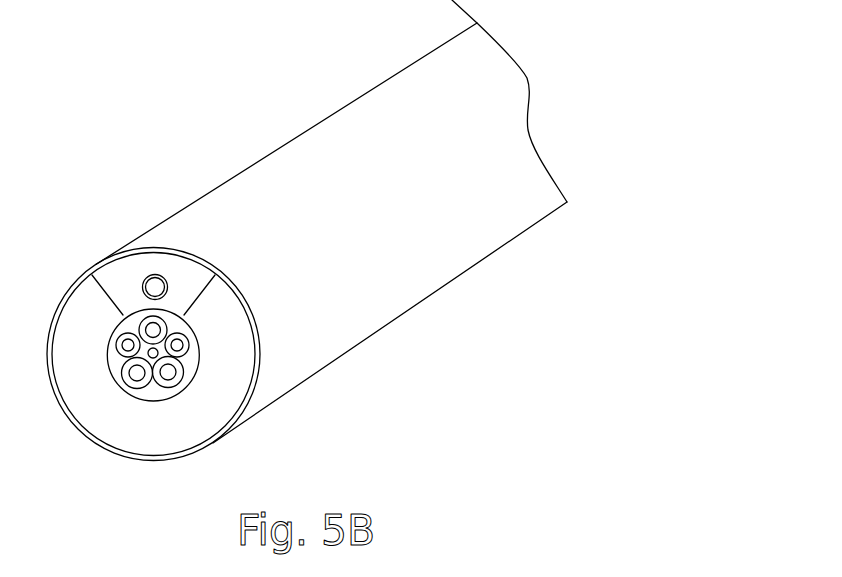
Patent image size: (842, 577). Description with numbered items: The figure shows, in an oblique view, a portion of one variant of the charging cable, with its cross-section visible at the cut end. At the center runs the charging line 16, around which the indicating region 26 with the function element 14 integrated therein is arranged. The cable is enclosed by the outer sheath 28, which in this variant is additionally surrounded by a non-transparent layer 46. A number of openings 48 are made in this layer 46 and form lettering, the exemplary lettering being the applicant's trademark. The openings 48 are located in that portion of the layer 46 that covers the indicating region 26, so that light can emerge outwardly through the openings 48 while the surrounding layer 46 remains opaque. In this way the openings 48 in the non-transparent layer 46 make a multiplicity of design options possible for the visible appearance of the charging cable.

The function element 14 is at (151, 273).
The charging line 16 is at (105, 342).
The indicating region 26 is at (109, 278).
The outer sheath 28 is at (52, 387).
The non-transparent layer 46 is at (82, 433).
The openings 48 is at (253, 196).